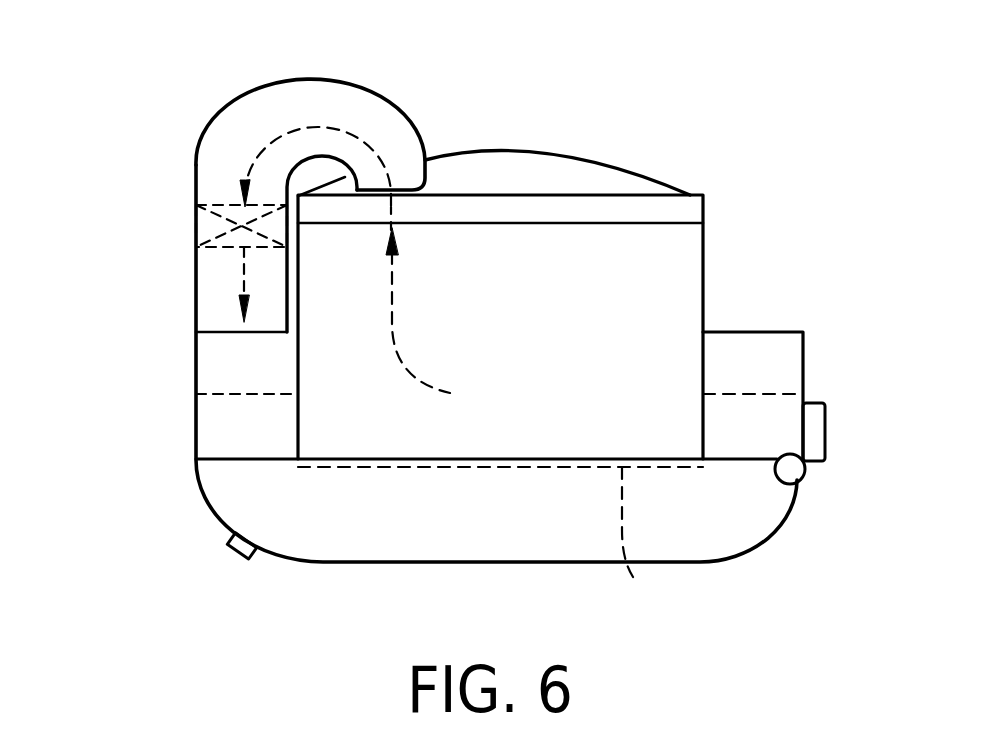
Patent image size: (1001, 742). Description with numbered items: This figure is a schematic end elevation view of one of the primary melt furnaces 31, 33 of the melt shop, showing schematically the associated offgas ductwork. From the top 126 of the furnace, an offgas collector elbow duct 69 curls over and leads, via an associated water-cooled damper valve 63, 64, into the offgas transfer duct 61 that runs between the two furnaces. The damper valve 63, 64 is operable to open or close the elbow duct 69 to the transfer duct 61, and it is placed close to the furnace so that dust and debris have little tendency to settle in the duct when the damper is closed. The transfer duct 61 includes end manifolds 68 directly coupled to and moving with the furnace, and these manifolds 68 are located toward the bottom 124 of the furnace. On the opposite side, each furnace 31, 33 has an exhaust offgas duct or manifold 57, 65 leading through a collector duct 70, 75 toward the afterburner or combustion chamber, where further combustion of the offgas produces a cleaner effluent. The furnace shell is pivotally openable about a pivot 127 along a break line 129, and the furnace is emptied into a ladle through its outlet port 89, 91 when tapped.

The offgas collector elbow duct 69 is at (274, 110).
The top of furnace 126 is at (541, 172).
The damper valve 63 is at (158, 240).
The damper valve 64 is at (196, 225).
The offgas transfer duct 61 is at (264, 382).
The end manifold 68 is at (215, 430).
The primary melt furnace 31 is at (500, 331).
The primary melt furnace 33 is at (540, 337).
The collector duct 70 is at (778, 354).
The collector duct 75 is at (777, 345).
The pivot 127 is at (788, 472).
The exhaust offgas duct or manifold 57 is at (783, 529).
The exhaust offgas duct or manifold 65 is at (755, 443).
The break line 129 is at (654, 546).
The bottom of furnace 124 is at (372, 565).
The outlet port 89 is at (213, 579).
The outlet port 91 is at (233, 553).